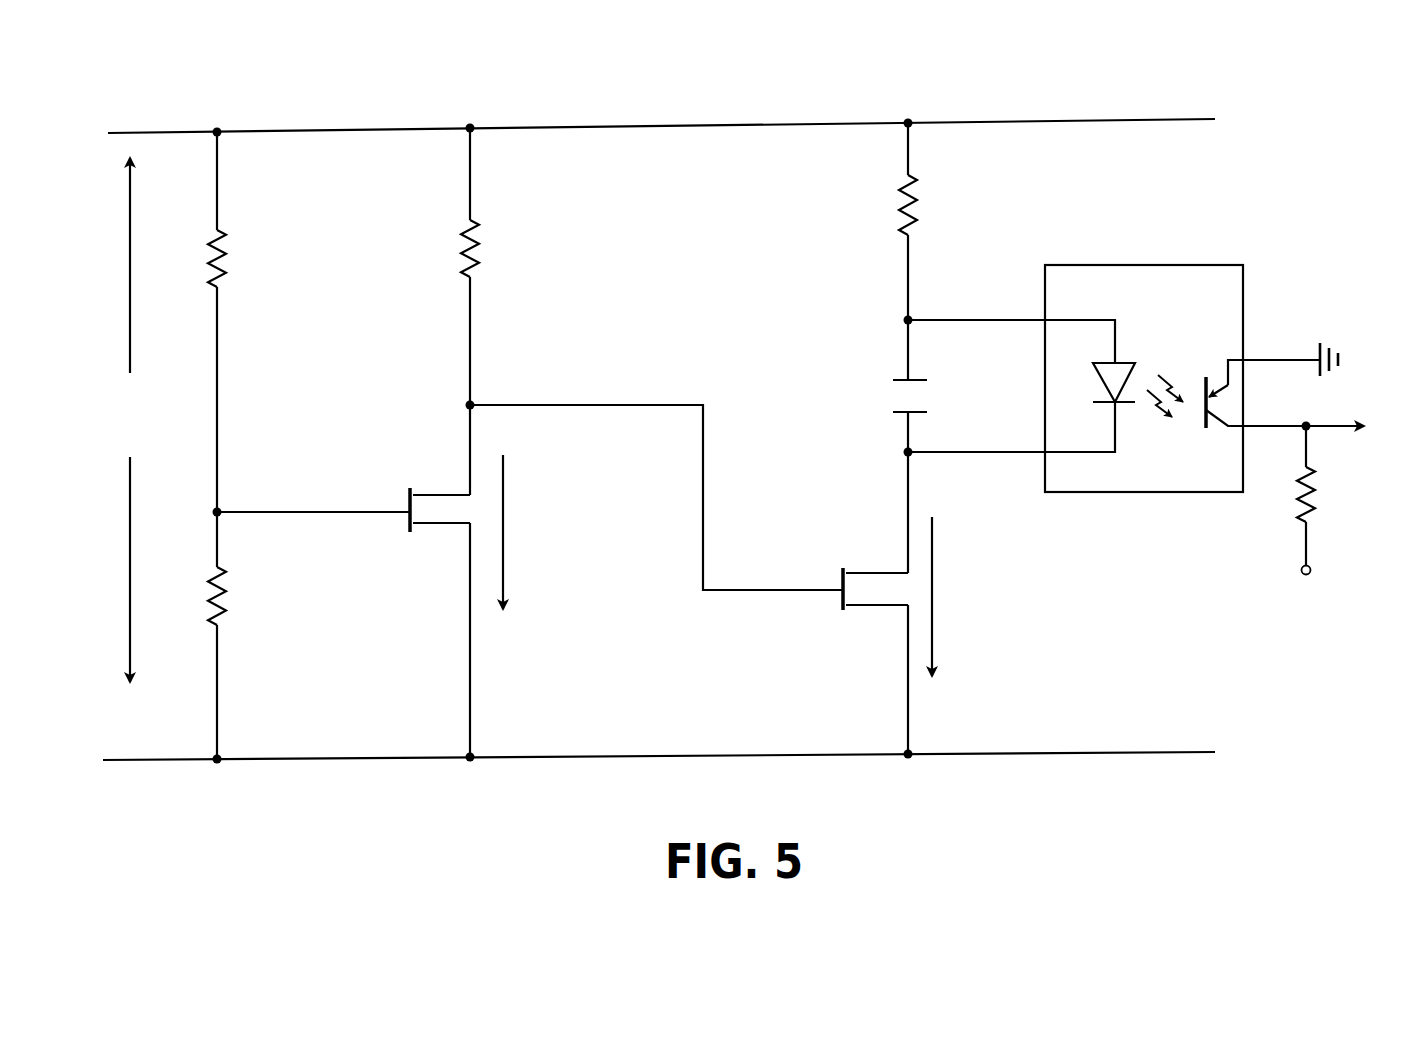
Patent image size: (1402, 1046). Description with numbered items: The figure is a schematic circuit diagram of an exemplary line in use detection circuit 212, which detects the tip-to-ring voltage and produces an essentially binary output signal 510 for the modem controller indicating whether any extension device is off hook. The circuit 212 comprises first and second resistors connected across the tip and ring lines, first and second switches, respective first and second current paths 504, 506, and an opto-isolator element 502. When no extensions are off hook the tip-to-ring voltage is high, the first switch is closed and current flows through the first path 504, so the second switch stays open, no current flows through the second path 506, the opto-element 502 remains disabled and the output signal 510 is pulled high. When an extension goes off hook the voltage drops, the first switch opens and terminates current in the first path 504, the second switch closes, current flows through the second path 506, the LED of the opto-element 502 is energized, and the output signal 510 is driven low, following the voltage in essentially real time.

The line in use detection circuit 212 is at (352, 827).
The opto-isolator element 502 is at (1125, 265).
The first current path 504 is at (505, 555).
The second current path 506 is at (934, 633).
The output signal 510 is at (1362, 417).